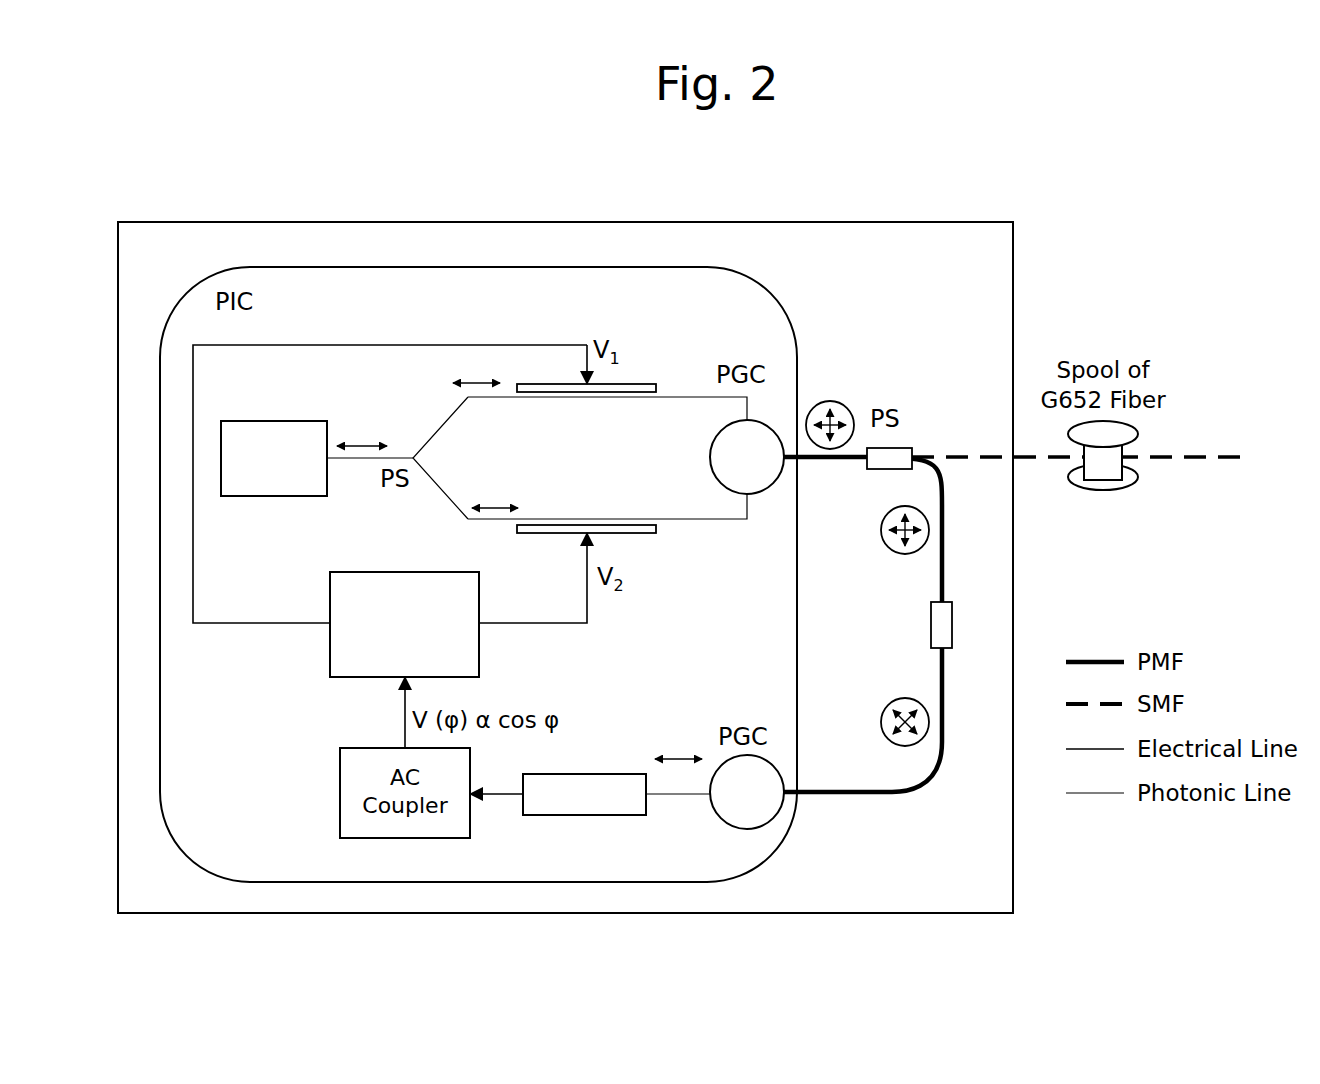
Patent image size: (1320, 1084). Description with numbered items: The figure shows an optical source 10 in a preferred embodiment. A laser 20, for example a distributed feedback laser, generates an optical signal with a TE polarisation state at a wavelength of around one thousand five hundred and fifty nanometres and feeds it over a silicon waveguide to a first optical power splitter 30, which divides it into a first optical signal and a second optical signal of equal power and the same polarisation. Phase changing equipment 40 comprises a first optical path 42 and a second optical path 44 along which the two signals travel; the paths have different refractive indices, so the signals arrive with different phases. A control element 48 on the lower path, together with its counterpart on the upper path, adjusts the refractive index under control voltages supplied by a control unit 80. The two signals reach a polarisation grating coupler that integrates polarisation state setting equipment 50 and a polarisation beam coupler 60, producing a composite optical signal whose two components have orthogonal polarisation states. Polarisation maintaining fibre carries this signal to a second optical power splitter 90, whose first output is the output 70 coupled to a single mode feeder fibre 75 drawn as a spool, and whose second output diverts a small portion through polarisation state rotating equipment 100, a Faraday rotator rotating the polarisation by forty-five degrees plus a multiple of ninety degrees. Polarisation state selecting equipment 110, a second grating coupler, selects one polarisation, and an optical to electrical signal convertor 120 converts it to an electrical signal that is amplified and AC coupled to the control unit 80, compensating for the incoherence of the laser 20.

The optical source 10 is at (870, 185).
The laser 20 is at (303, 421).
The first optical power splitter 30 is at (418, 458).
The phase changing equipment 40 is at (642, 383).
The first optical path 42 is at (623, 398).
The second optical path 44 is at (560, 519).
The control element 48 is at (560, 533).
The polarisation state setting equipment 50 is at (765, 434).
The polarisation beam coupler 60 is at (804, 404).
The output 70 is at (926, 455).
The feeder fibre 75 is at (1200, 460).
The control unit 80 is at (336, 655).
The second optical power splitter 90 is at (878, 470).
The polarisation state rotating equipment 100 is at (931, 620).
The polarisation state selecting equipment 110 is at (765, 812).
The optical to electrical signal convertor 120 is at (573, 815).